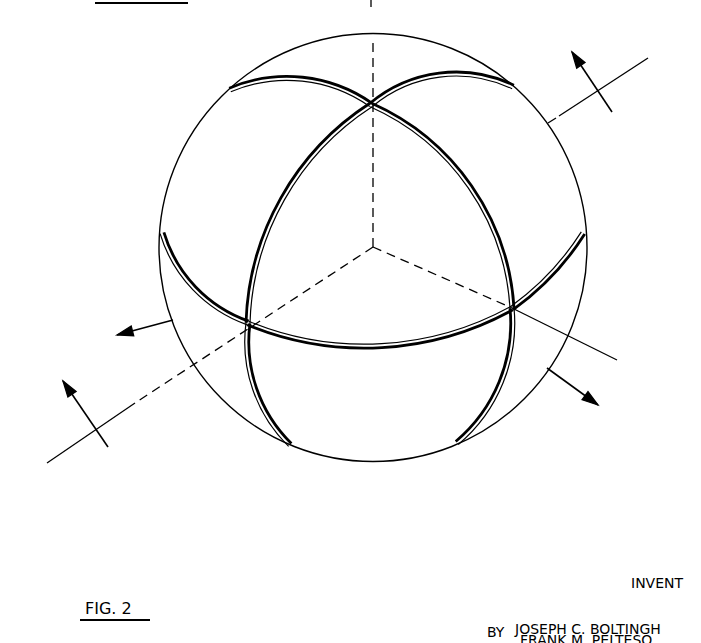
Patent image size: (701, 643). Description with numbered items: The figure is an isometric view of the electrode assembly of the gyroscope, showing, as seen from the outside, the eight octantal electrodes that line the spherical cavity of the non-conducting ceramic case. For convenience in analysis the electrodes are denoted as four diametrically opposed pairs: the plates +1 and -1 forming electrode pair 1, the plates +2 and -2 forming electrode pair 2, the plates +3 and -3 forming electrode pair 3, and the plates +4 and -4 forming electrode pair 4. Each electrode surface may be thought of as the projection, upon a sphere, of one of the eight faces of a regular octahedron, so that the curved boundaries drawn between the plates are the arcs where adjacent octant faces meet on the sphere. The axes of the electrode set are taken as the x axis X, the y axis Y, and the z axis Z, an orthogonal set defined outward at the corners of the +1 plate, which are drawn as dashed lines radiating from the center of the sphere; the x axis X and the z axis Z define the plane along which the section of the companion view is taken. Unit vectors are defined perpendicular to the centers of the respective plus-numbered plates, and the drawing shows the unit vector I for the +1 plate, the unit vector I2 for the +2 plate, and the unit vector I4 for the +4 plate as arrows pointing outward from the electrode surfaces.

The electrode pair +1 and - 1 is at (380, 225).
The electrode pair +2 and - 2 is at (371, 260).
The electrode pair +3 and - 3 is at (379, 248).
The electrode pair +4 and - 4 is at (372, 244).
The x axis X is at (167, 403).
The y axis Y is at (622, 378).
The z axis Z is at (378, 32).
The unit vector 1-sub-1 I is at (602, 136).
The unit vector 1-sub-2 I2 is at (602, 408).
The unit vector 1-sub-4 I4 is at (110, 328).